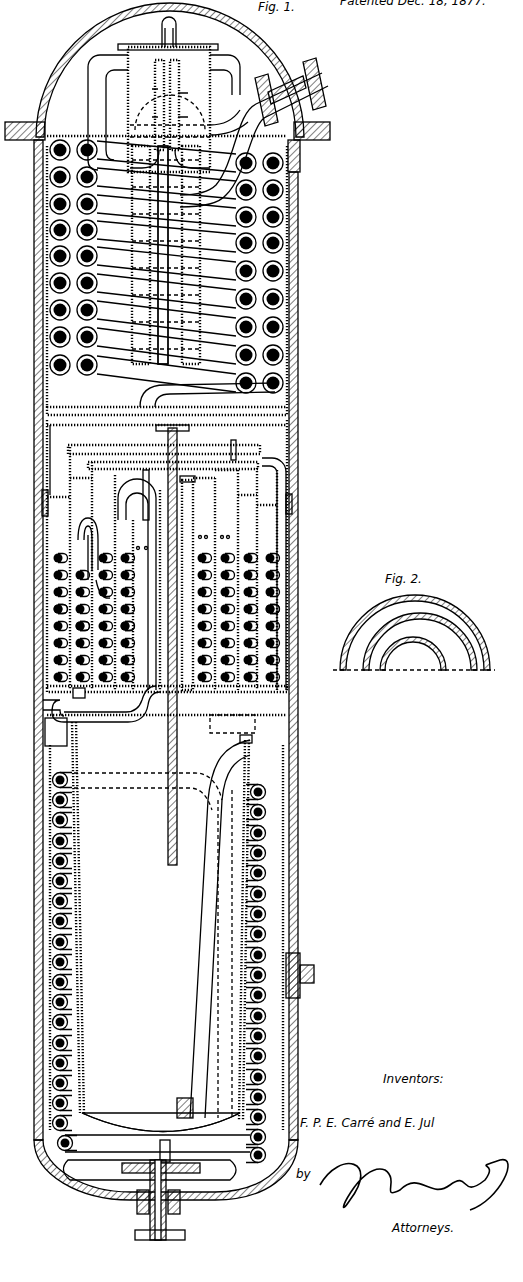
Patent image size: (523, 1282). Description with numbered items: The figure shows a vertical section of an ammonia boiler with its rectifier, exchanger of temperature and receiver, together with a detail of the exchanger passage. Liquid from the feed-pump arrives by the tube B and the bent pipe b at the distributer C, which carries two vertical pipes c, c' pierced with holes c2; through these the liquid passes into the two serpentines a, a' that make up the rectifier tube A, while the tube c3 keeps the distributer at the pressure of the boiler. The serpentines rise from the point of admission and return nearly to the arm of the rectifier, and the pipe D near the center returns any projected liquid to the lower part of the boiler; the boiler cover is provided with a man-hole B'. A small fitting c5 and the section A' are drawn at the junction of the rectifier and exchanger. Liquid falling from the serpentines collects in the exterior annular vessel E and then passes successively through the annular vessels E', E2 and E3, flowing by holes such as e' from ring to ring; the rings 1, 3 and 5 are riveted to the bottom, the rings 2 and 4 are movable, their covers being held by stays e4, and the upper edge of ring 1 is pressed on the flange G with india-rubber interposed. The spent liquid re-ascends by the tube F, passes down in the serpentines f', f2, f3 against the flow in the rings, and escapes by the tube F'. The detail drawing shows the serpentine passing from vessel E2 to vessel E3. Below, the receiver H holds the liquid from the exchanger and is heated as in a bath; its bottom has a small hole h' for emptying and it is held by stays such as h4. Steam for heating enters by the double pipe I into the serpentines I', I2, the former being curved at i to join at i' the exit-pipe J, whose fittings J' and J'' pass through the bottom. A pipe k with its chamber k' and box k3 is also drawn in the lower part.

In FIG. 1, the tube A is at (167, 268).
In FIG. 1, the absorber section A' is at (167, 556).
In FIG. 1, the serpentine a is at (166, 267).
In FIG. 1, the serpentine a' is at (184, 255).
In FIG. 1, the tube B is at (294, 92).
In FIG. 1, the man-hole B' is at (167, 601).
In FIG. 1, the bent pipe b is at (176, 131).
In FIG. 1, the distributer C is at (168, 103).
In FIG. 1, the vertical pipe c is at (163, 255).
In FIG. 1, the vertical pipe c' is at (154, 325).
In FIG. 1, the holes c2 is at (170, 102).
In FIG. 1, the tube c3 is at (167, 279).
In FIG. 1, the small pipe c5 is at (236, 455).
In FIG. 1, the pipe D is at (164, 645).
In FIG. 1, the exterior annular vessel E is at (58, 568).
In FIG. 1, the annular vessel E' is at (163, 576).
In FIG. 1, the annular vessel E2 is at (173, 576).
In FIG. 2, the annular vessel E2 is at (415, 632).
In FIG. 1, the annular vessel E3 is at (204, 584).
In FIG. 2, the annular vessel E3 is at (416, 653).
In FIG. 1, the holes e' is at (214, 529).
In FIG. 1, the stays e4 is at (195, 483).
In FIG. 1, the ring 1 is at (60, 601).
In FIG. 1, the ring 2 is at (83, 589).
In FIG. 1, the ring 3 is at (117, 589).
In FIG. 1, the ring 4 is at (239, 580).
In FIG. 1, the central ring 5 is at (139, 580).
In FIG. 1, the tube F is at (101, 704).
In FIG. 1, the tube F' is at (274, 557).
In FIG. 1, the serpentine f' is at (170, 611).
In FIG. 1, the serpentine f2 is at (119, 622).
In FIG. 1, the serpentine f3 is at (48, 612).
In FIG. 1, the flange G is at (42, 505).
In FIG. 1, the receiver H is at (162, 927).
In FIG. 1, the small hole h' is at (161, 1127).
In FIG. 1, the stay h4 is at (163, 1144).
In FIG. 1, the double pipe I is at (181, 952).
In FIG. 1, the serpentine I' is at (166, 909).
In FIG. 1, the serpentine I2 is at (263, 974).
In FIG. 1, the curve i is at (154, 1155).
In FIG. 1, the junction i' is at (153, 1171).
In FIG. 1, the exit-pipe J is at (161, 1200).
In FIG. 1, the drain bar J' is at (165, 1236).
In FIG. 1, the nuts J'' is at (155, 1205).
In FIG. 1, the siphon pipe k is at (162, 929).
In FIG. 1, the side chamber k' is at (166, 922).
In FIG. 1, the pipe box k3 is at (232, 725).